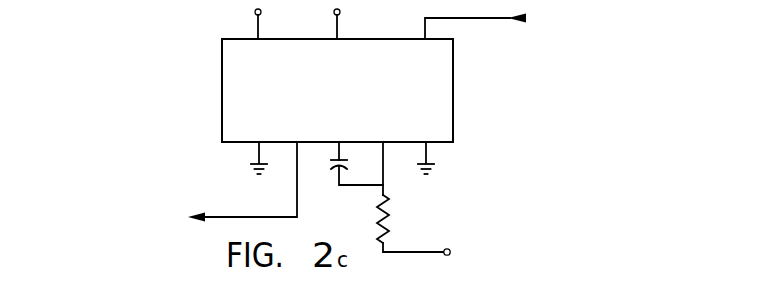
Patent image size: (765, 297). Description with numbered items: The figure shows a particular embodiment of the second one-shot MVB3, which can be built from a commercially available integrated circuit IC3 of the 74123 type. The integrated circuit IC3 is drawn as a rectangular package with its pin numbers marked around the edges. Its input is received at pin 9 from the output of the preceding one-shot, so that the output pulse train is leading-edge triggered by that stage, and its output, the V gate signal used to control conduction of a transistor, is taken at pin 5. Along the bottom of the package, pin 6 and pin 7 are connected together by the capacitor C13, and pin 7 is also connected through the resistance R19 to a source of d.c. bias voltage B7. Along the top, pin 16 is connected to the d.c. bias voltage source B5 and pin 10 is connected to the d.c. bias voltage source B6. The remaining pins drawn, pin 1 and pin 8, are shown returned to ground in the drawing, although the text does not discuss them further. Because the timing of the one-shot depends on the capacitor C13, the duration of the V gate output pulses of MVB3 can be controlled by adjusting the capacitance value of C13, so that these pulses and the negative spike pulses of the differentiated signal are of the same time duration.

The integrated circuit IC3 is at (337, 90).
The capacitor C13 is at (357, 170).
The resistance R19 is at (410, 223).
The d.c. bias voltage source B5 is at (281, 12).
The d.c. bias voltage source B6 is at (361, 12).
The d.c. bias voltage source B7 is at (470, 252).
The pin 16 is at (257, 39).
The pin 10 is at (338, 39).
The pin 9 is at (559, 35).
The pin 1 is at (259, 147).
The pin 5 is at (175, 196).
The pin 6 is at (338, 140).
The pin 7 is at (382, 157).
The pin 8 is at (426, 147).